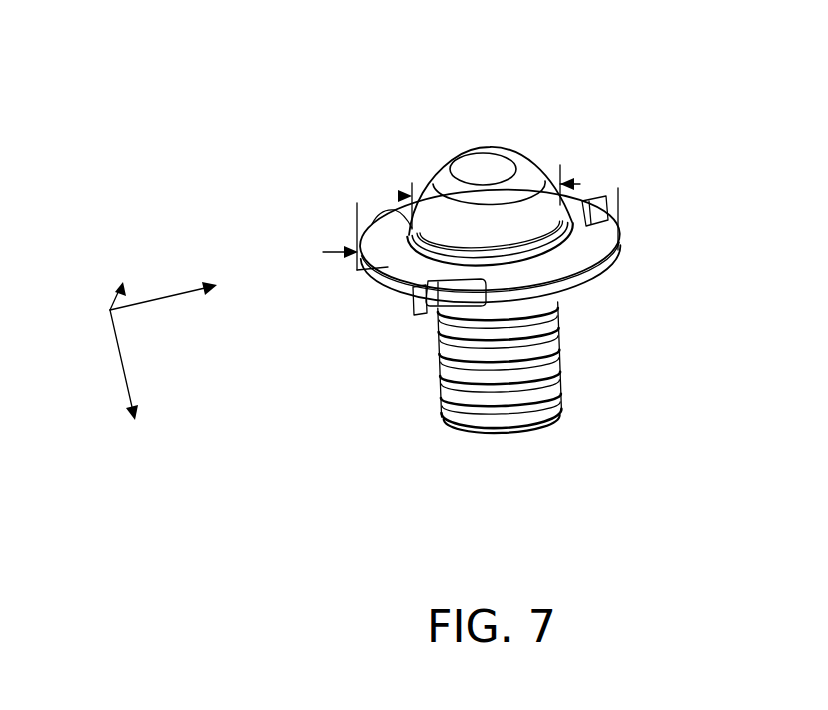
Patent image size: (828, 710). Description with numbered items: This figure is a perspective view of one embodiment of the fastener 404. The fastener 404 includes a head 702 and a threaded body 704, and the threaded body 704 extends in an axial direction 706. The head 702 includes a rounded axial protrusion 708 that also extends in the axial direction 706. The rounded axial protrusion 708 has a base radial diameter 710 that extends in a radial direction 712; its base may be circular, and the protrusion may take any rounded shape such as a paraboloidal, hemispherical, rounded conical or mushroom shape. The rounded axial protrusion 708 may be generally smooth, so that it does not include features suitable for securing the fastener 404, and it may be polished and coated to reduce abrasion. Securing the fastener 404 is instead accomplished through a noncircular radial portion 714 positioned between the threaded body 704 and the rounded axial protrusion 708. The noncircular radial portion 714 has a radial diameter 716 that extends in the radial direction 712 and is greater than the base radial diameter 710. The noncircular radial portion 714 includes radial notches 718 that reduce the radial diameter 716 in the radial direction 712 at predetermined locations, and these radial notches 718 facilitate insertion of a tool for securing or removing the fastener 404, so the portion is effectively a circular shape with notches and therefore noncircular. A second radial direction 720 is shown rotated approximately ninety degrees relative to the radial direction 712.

The fastener 404 is at (196, 59).
The head 702 is at (557, 268).
The threaded body 704 is at (556, 372).
The axial direction 706 is at (126, 372).
The rounded axial protrusion 708 is at (488, 165).
The base radial diameter 710 is at (400, 196).
The radial direction 712 is at (178, 292).
The noncircular radial portion 714 is at (357, 270).
The radial diameter 716 is at (630, 238).
The radial notches 718 is at (412, 312).
The radial direction 720 is at (118, 288).